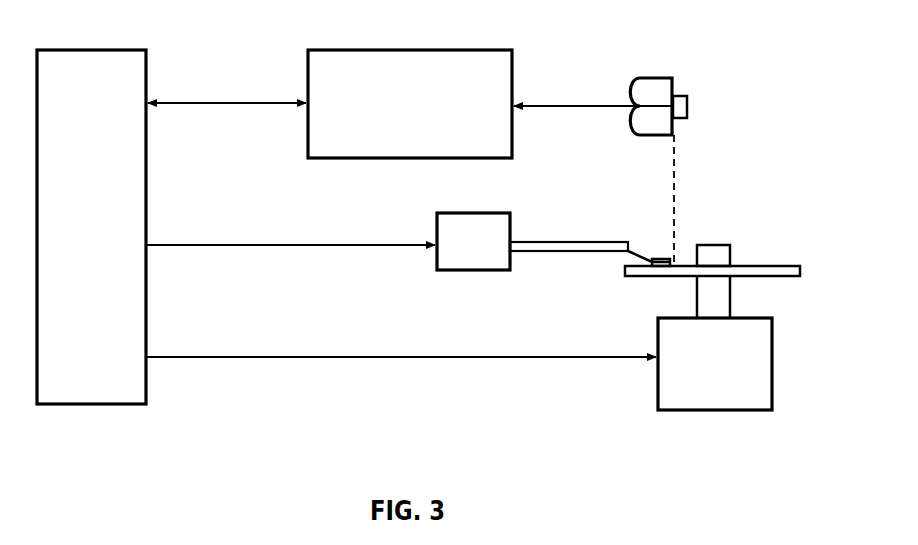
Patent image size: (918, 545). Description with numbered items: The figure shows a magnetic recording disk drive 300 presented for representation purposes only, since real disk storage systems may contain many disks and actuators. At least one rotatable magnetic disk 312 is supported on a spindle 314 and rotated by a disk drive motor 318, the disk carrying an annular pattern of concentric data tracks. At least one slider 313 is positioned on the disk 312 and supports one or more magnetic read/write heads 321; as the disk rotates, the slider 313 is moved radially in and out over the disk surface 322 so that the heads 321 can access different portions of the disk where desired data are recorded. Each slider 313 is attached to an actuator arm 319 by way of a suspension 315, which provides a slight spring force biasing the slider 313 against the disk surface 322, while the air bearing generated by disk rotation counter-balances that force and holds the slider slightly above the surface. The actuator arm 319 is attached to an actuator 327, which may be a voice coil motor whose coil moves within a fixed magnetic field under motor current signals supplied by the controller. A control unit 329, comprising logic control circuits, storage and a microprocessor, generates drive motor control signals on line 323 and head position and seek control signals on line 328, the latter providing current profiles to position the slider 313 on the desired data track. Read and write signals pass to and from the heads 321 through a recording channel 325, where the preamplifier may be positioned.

The disk drive 300 is at (278, 397).
The rotatable magnetic disk 312 is at (768, 266).
The slider 313 is at (658, 78).
The spindle 314 is at (723, 245).
The suspension 315 is at (627, 262).
The disk drive motor 318 is at (757, 318).
The actuator arm 319 is at (557, 253).
The magnetic read/write head 321 is at (688, 107).
The disk surface 322 is at (683, 265).
The line 323 is at (424, 358).
The recording channel 325 is at (425, 50).
The actuator 327 is at (470, 213).
The line 328 is at (362, 248).
The control unit 329 is at (110, 50).